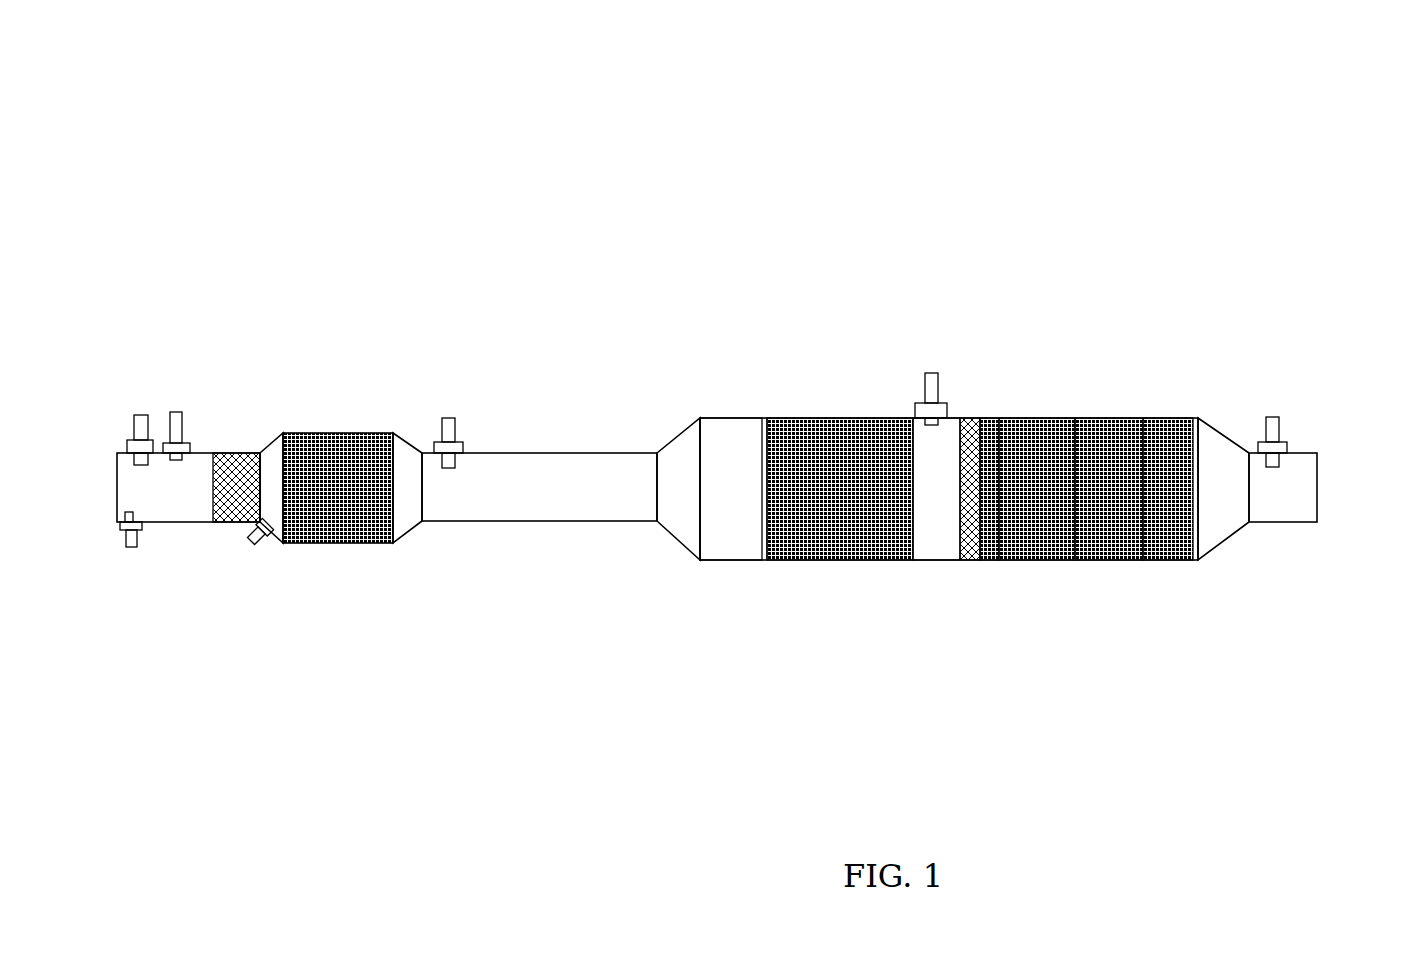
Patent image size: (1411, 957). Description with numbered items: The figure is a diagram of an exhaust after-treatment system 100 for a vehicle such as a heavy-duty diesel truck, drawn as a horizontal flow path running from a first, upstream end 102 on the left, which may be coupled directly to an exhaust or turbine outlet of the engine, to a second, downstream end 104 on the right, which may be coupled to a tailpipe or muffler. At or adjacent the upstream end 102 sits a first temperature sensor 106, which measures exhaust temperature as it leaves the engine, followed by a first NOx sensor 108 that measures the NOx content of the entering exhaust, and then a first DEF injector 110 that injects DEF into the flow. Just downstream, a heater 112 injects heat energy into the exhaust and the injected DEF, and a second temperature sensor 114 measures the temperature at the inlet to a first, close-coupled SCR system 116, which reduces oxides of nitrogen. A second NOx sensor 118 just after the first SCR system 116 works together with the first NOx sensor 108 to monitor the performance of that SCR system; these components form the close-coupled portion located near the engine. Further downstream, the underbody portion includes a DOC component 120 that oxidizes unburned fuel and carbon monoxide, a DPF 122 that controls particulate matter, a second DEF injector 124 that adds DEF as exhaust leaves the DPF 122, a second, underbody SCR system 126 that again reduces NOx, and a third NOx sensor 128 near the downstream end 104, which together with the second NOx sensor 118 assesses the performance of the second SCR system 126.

The exhaust after-treatment system 100 is at (174, 124).
The first, upstream end 102 is at (105, 485).
The second, downstream end 104 is at (1328, 481).
The first temperature sensor 106 is at (130, 548).
The first NOx sensor 108 is at (141, 415).
The first DEF injector 110 is at (176, 412).
The heater 112 is at (240, 477).
The second temperature sensor 114 is at (254, 552).
The first, close-coupled SCR system 116 is at (338, 523).
The second NOx sensor 118 is at (451, 418).
The DOC component 120 is at (725, 425).
The DPF 122 is at (836, 434).
The second DEF injector 124 is at (928, 378).
The second, underbody SCR system 126 is at (1045, 432).
The third NOx sensor 128 is at (1272, 417).